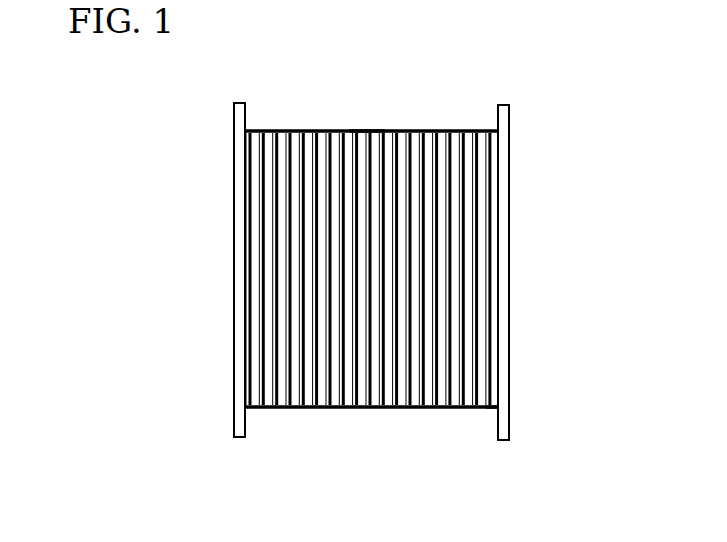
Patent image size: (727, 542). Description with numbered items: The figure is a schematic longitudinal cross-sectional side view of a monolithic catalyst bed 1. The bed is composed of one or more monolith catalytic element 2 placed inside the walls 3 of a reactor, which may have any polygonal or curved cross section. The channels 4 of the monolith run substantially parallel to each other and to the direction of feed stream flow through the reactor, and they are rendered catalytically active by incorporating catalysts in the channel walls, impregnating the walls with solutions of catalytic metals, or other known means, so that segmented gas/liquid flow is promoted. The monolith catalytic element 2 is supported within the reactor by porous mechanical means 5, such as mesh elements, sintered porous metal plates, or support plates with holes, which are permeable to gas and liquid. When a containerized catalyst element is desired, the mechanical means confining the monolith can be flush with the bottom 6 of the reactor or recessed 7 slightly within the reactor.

The monolithic catalyst bed 1 is at (430, 281).
The monolith catalytic element 2 is at (482, 215).
The walls 3 is at (509, 158).
The channels 4 is at (368, 130).
The porous mechanical means 5 is at (292, 130).
The bottom 6 is at (502, 440).
The recessed 7 is at (497, 410).